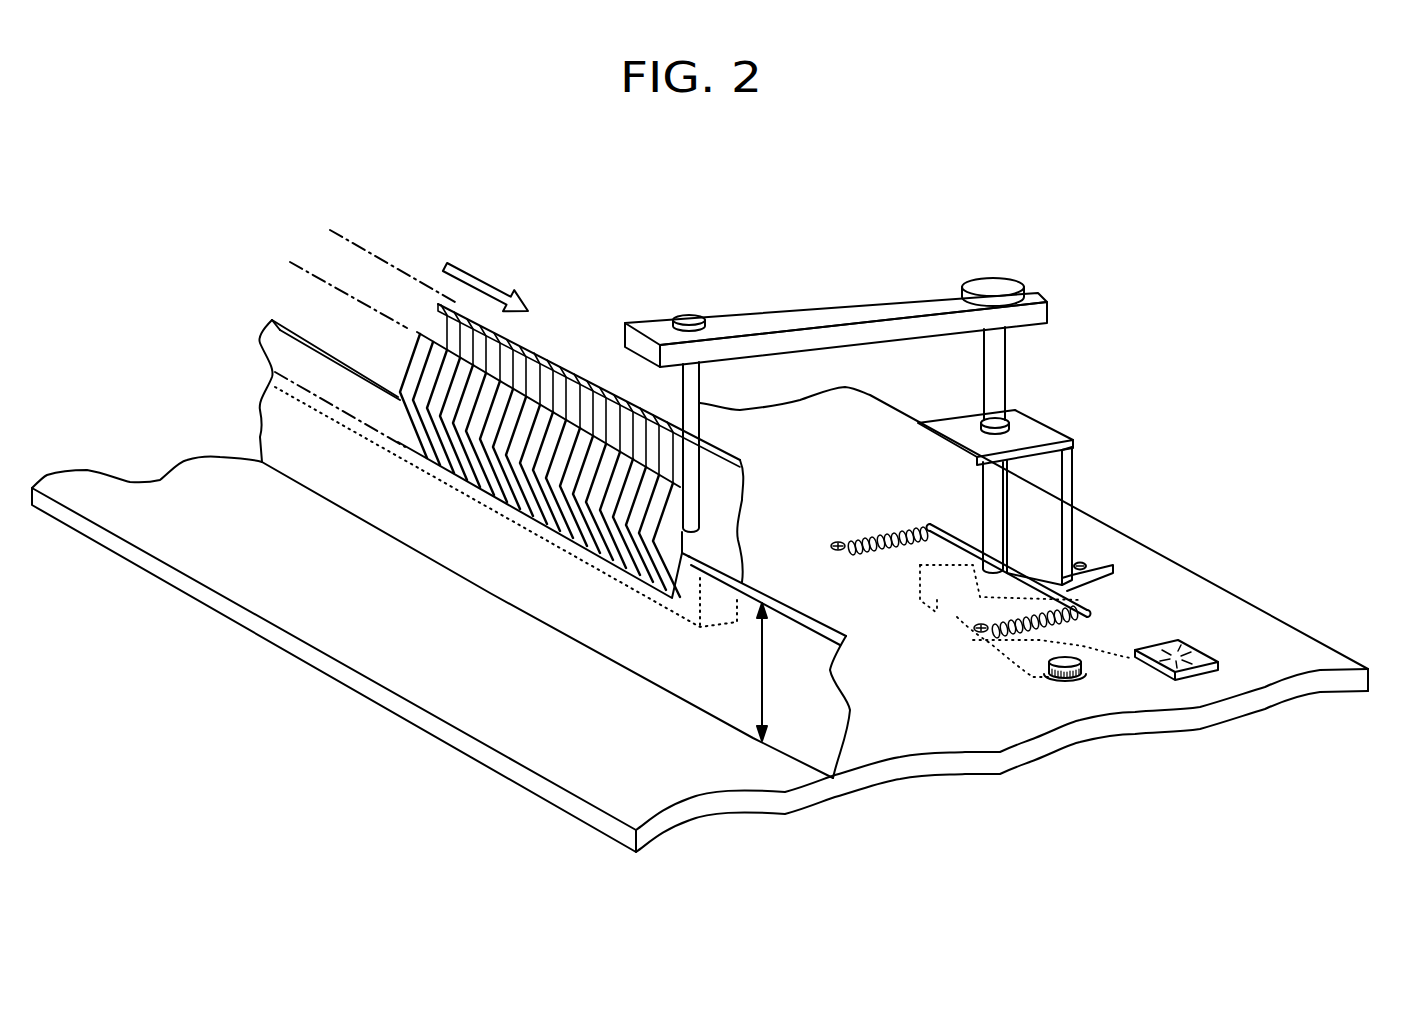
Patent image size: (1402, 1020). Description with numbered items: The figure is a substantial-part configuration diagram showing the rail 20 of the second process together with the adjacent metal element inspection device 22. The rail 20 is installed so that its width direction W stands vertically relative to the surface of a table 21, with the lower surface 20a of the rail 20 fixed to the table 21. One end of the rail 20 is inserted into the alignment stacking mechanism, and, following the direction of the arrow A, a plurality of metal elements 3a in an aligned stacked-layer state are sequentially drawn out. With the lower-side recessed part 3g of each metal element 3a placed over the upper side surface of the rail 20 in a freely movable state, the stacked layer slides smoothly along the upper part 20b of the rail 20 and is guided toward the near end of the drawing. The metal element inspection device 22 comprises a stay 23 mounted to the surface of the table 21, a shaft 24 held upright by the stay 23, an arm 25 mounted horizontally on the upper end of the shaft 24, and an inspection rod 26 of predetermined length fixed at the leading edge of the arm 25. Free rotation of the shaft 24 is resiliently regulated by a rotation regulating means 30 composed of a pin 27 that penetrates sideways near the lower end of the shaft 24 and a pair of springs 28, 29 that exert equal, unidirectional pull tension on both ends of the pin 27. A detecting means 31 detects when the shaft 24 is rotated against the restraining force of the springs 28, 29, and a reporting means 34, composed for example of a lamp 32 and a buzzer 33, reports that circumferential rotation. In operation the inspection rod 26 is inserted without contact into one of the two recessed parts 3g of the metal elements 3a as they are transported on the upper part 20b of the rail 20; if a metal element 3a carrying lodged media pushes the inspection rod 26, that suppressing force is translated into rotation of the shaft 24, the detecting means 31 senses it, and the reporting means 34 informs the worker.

The metal element 3a is at (487, 487).
The recessed part 3g is at (701, 489).
The rail 20 is at (573, 602).
The lower surface 20a is at (608, 657).
The upper part 20b is at (813, 623).
The table 21 is at (483, 752).
The metal element inspection device 22 is at (908, 380).
The stay 23 is at (1073, 480).
The shaft 24 is at (1010, 377).
The arm 25 is at (837, 310).
The inspection rod 26 is at (700, 392).
The pin 27 is at (947, 540).
The spring 28 is at (880, 523).
The spring 29 is at (1088, 652).
The rotation regulating means 30 is at (1026, 576).
The detecting means 31 is at (937, 613).
The lamp 32 is at (1062, 690).
The buzzer 33 is at (1176, 715).
The reporting means 34 is at (1137, 744).
The arrow A is at (488, 283).
The width direction W is at (767, 677).